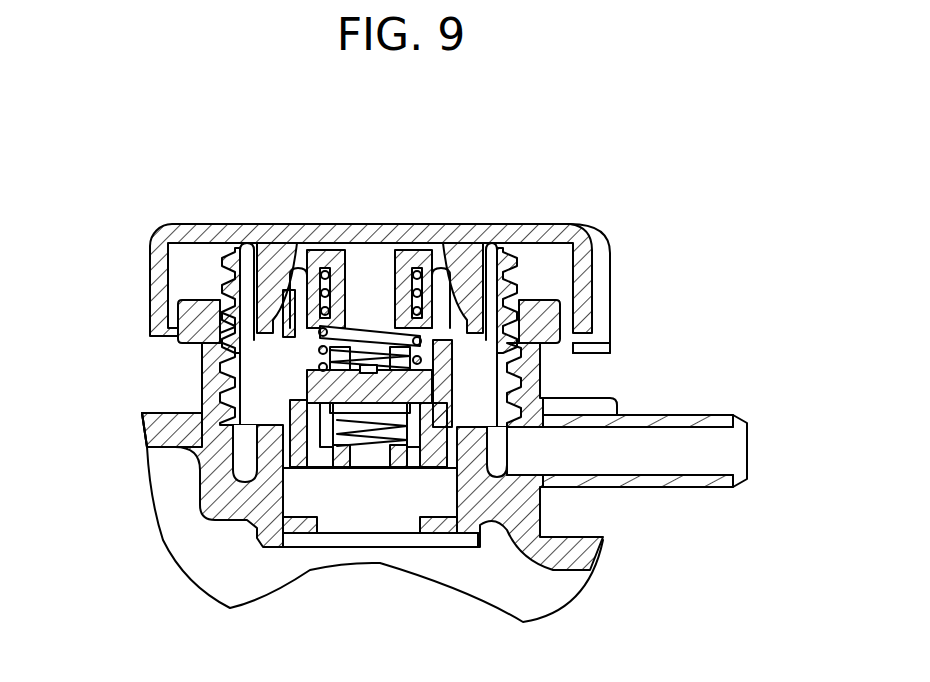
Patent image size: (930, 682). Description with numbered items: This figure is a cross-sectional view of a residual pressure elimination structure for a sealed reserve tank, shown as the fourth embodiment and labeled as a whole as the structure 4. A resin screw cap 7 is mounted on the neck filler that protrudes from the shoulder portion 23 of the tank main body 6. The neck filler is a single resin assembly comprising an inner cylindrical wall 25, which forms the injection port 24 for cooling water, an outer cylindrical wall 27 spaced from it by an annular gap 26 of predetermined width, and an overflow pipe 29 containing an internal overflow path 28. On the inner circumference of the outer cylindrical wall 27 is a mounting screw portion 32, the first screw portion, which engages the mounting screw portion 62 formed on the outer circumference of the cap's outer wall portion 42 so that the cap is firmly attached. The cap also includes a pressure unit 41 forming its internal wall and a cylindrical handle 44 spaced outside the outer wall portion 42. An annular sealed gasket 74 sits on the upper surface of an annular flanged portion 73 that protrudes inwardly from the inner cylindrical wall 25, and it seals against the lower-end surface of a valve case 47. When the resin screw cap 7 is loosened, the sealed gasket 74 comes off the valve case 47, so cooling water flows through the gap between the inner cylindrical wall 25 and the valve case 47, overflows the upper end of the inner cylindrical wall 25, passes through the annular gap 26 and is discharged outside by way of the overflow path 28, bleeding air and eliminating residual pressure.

The fuel cap 4 is at (197, 131).
The tank main body 6 is at (136, 433).
The resin screw cap 7 is at (425, 245).
The shoulder portion 23 is at (157, 427).
The injection port 24 is at (350, 503).
The inner cylindrical wall 25 is at (265, 443).
The annular gap 26 is at (493, 460).
The outer cylindrical wall 27 is at (208, 369).
The overflow path 28 is at (700, 458).
The overflow pipe 29 is at (700, 422).
The mounting screw portion 32 is at (222, 296).
The pressure unit 41 is at (289, 241).
The outer wall portion 42 is at (517, 247).
The cylindrical handle 44 is at (610, 292).
The valve case 47 is at (575, 349).
The mounting screw portion 62 is at (522, 308).
The annular flanged portion 73 is at (433, 541).
The sealed gasket 74 is at (287, 530).